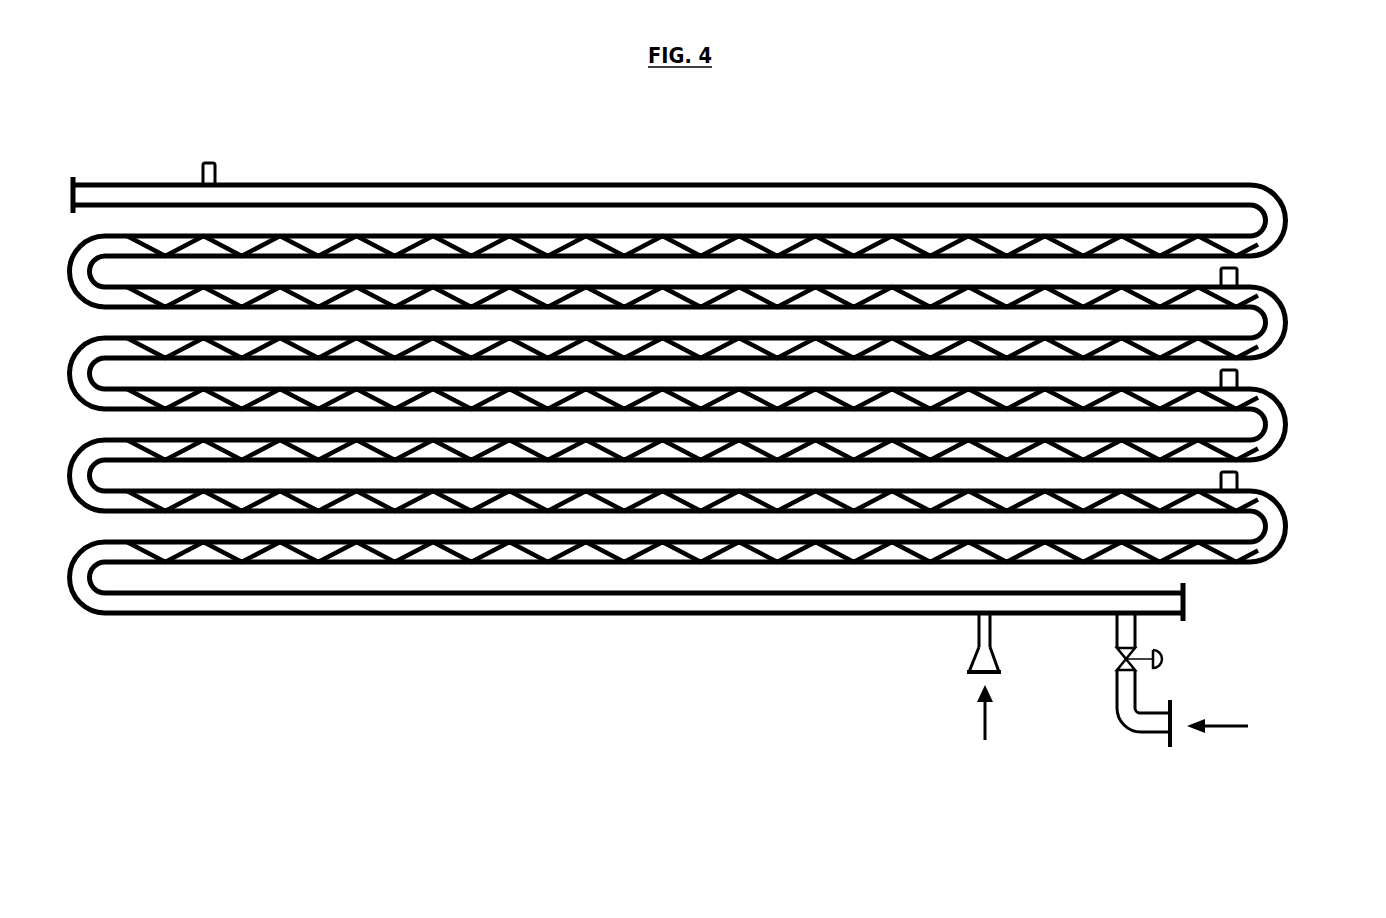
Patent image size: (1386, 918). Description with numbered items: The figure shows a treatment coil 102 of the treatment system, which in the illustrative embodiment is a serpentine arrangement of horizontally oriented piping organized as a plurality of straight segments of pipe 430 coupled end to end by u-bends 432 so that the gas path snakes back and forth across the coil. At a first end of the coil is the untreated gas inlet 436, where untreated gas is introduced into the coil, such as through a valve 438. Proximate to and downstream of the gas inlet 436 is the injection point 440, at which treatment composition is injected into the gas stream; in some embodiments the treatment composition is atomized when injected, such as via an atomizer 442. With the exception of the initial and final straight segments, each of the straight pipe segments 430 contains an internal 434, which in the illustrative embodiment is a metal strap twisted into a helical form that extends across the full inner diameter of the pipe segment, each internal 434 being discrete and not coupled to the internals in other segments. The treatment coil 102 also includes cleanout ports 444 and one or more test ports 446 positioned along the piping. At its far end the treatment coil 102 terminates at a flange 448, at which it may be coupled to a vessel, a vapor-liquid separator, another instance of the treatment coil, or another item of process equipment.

The treatment coil 102 is at (729, 152).
The straight segment of pipe 430 is at (597, 605).
The u-bend 432 is at (88, 587).
The internal 434 is at (1195, 548).
The untreated gas inlet 436 is at (1133, 762).
The valve 438 is at (1175, 658).
The injection point 440 is at (928, 706).
The atomizer 442 is at (982, 662).
The cleanout port 444 is at (1232, 378).
The test port 446 is at (217, 173).
The flange 448 is at (88, 175).